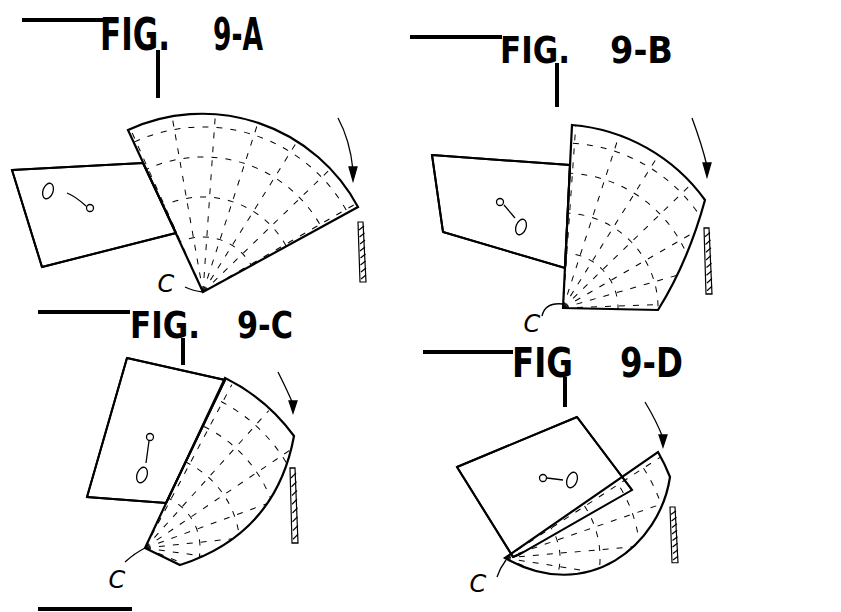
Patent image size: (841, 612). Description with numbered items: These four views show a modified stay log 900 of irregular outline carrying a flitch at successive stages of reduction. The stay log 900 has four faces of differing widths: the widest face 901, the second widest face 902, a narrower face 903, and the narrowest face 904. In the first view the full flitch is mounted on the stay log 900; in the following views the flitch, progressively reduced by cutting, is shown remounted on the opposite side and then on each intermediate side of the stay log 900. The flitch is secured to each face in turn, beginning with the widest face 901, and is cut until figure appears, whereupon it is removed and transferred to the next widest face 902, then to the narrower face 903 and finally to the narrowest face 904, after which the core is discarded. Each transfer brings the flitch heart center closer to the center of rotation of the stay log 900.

In FIG. 9A, the stay log 900 is at (83, 242).
In FIG. 9B, the stay log 900 is at (483, 230).
In FIG. 9C, the stay log 900 is at (123, 408).
In FIG. 9D, the stay log 900 is at (488, 467).
In FIG. 9A, the widest face 901 is at (125, 247).
In FIG. 9B, the widest face 901 is at (488, 157).
In FIG. 9C, the widest face 901 is at (98, 452).
In FIG. 9D, the widest face 901 is at (503, 535).
In FIG. 9A, the second widest face 902 is at (63, 163).
In FIG. 9B, the second widest face 902 is at (515, 253).
In FIG. 9C, the second widest face 902 is at (193, 447).
In FIG. 9D, the second widest face 902 is at (512, 442).
In FIG. 9A, the narrower face 903 is at (28, 237).
In FIG. 9B, the narrower face 903 is at (570, 190).
In FIG. 9C, the narrower face 903 is at (190, 378).
In FIG. 9D, the narrower face 903 is at (475, 497).
In FIG. 9A, the narrowest face 904 is at (140, 167).
In FIG. 9B, the narrowest face 904 is at (435, 193).
In FIG. 9C, the narrowest face 904 is at (120, 505).
In FIG. 9D, the narrowest face 904 is at (597, 437).